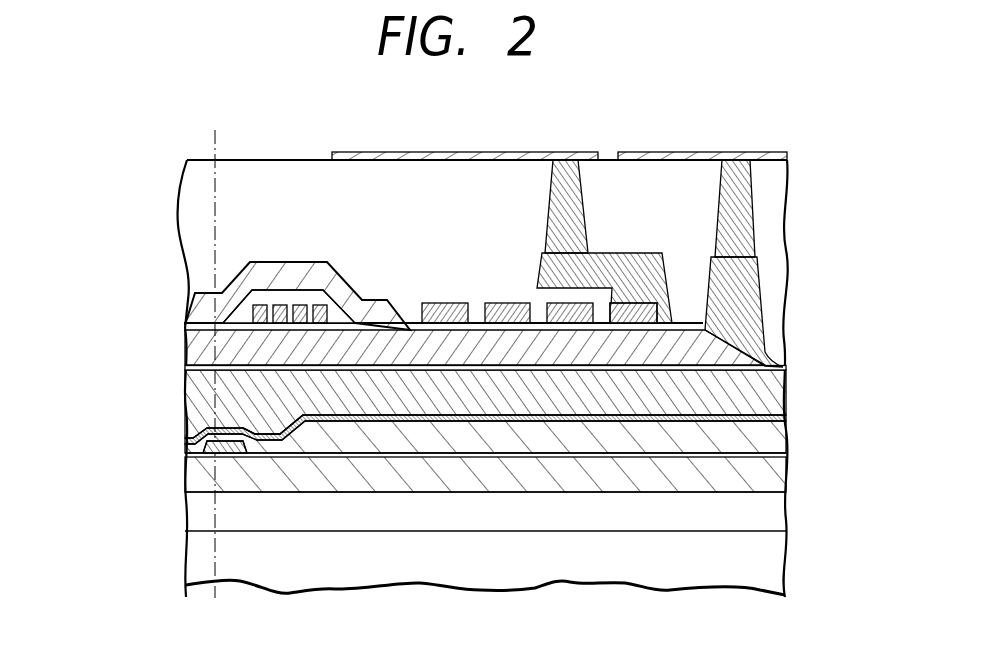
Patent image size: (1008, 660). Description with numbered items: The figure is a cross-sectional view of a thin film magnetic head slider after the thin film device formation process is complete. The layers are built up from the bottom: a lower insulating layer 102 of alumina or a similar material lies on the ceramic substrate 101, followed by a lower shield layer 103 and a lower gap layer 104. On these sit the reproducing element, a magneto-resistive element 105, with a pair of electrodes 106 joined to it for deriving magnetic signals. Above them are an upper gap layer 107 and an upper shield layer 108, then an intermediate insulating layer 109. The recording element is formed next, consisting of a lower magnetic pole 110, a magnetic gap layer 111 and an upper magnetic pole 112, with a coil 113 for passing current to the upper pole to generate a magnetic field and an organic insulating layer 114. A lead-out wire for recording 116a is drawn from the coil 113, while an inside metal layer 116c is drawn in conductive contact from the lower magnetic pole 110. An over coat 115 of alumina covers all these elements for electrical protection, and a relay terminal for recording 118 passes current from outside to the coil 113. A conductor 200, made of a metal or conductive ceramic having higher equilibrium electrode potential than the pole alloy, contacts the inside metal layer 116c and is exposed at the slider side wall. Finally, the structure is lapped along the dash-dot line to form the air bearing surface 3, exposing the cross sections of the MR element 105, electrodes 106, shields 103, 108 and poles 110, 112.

The air bearing surface 3 is at (216, 142).
The ceramic substrate 101 is at (542, 577).
The lower insulating layer 102 is at (190, 512).
The lower shield layer 103 is at (190, 475).
The lower gap layer 104 is at (780, 452).
The magneto-resistive element 105 is at (235, 446).
The pair of electrodes 106 is at (330, 421).
The upper gap layer 107 is at (780, 417).
The upper shield layer 108 is at (190, 402).
The intermediate insulating layer 109 is at (783, 367).
The lower magnetic pole 110 is at (190, 348).
The magnetic gap layer 111 is at (190, 328).
The upper magnetic pole 112 is at (198, 308).
The coil 113 is at (508, 303).
The organic insulating layer 114 is at (287, 292).
The over coat 115 is at (192, 213).
The lead-out wire for recording 116a is at (582, 217).
The inside metal layer 116c is at (760, 287).
The relay terminal for recording 118 is at (500, 151).
The conductor 200 is at (707, 152).